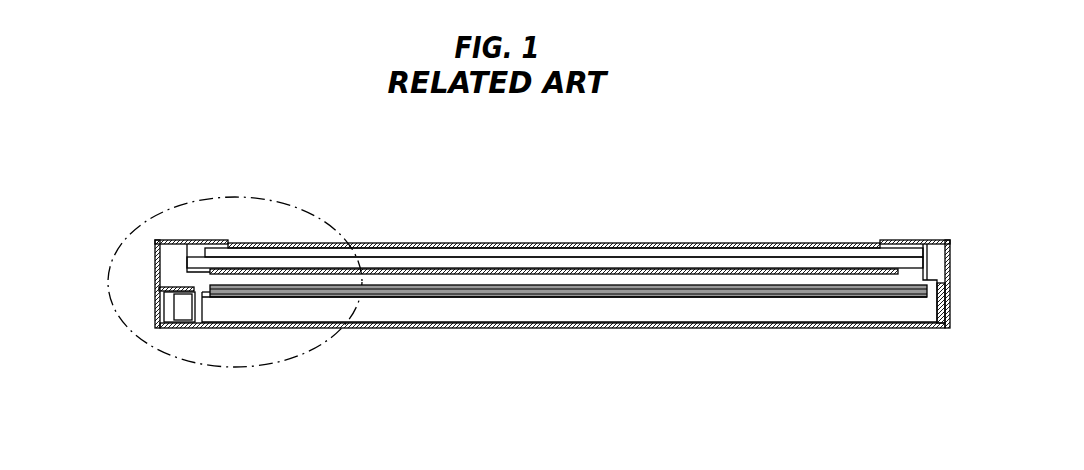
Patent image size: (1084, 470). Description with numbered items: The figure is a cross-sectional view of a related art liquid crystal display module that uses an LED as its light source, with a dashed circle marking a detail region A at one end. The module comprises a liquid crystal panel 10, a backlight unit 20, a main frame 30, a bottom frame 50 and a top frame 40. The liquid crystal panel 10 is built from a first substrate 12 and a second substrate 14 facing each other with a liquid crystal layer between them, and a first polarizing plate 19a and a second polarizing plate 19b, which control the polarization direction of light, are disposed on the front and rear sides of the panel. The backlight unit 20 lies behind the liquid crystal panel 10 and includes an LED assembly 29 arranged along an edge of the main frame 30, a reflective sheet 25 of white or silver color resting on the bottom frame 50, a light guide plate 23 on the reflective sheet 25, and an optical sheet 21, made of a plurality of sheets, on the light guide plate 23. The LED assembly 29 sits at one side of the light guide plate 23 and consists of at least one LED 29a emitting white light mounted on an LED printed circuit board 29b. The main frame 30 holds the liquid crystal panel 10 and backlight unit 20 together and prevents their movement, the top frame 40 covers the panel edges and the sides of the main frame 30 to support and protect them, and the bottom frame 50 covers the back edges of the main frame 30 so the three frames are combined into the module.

The liquid crystal panel 10 is at (555, 205).
The first substrate 12 is at (577, 263).
The second substrate 14 is at (530, 252).
The first polarizing plate 19a is at (740, 272).
The second polarizing plate 19b is at (702, 247).
The backlight unit 20 is at (533, 367).
The optical sheet 21 is at (275, 293).
The light guide plate 23 is at (238, 315).
The reflective sheet 25 is at (312, 328).
The LED assembly 29 is at (169, 354).
The LED 29a is at (184, 307).
The LED printed circuit board 29b is at (167, 312).
The main frame 30 is at (177, 272).
The top frame 40 is at (910, 240).
The bottom frame 50 is at (460, 330).
The detail region A is at (132, 333).